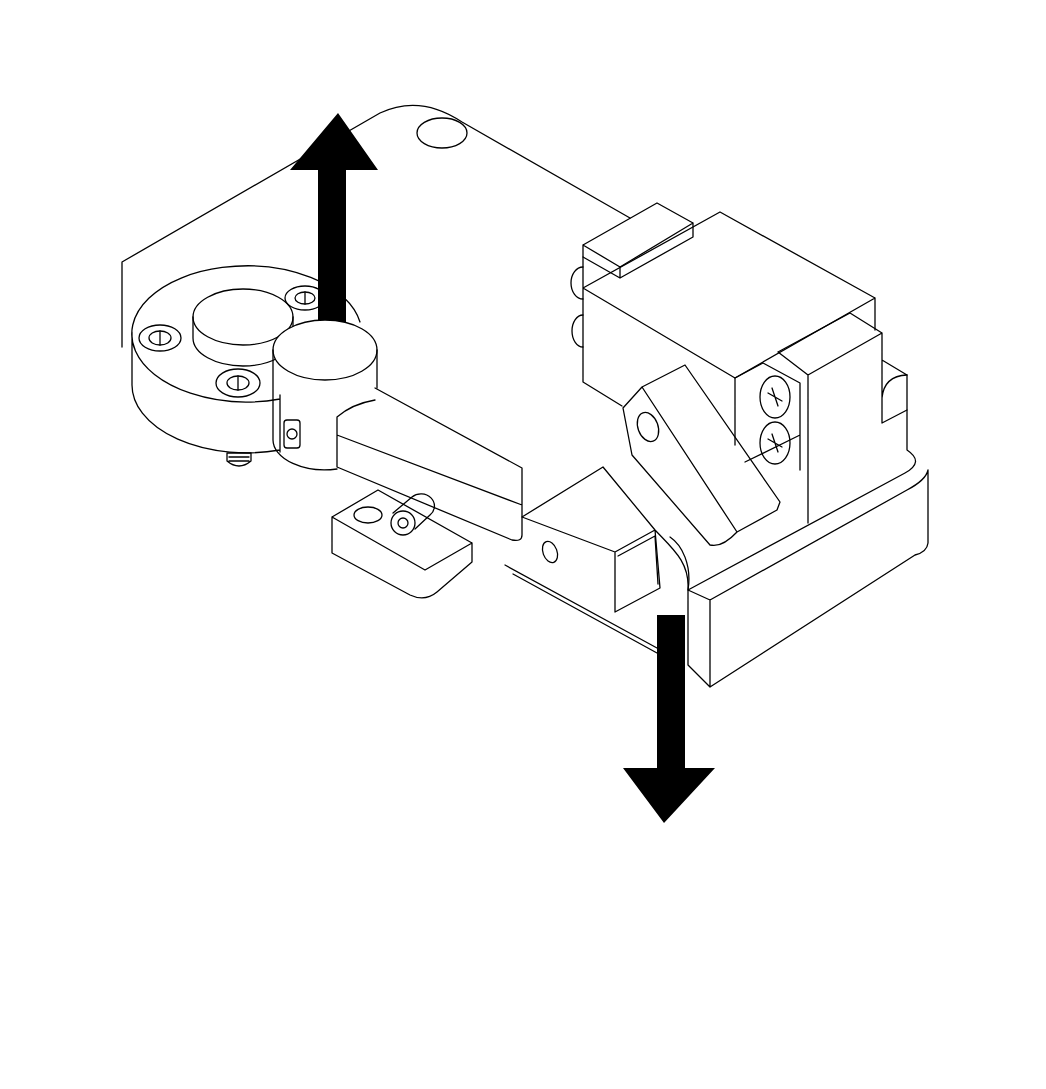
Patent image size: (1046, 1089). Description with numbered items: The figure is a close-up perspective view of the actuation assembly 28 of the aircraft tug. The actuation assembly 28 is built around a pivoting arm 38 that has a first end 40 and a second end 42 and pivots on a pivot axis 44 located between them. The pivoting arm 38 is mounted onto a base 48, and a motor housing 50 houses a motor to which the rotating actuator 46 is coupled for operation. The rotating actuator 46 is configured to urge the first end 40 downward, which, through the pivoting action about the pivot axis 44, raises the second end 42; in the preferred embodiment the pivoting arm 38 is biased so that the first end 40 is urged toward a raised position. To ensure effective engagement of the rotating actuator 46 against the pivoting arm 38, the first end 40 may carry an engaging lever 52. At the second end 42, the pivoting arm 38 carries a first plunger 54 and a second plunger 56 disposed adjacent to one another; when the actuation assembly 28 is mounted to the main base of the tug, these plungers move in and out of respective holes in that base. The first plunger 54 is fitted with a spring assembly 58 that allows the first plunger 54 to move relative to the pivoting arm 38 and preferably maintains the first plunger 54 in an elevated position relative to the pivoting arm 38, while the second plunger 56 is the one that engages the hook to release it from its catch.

The actuation assembly 28 is at (192, 95).
The pivoting arm 38 is at (361, 481).
The first end 40 is at (598, 570).
The second end 42 is at (230, 487).
The pivot axis 44 is at (401, 525).
The rotating actuator 46 is at (687, 498).
The base 48 is at (501, 345).
The motor housing 50 is at (753, 313).
The engaging lever 52 is at (653, 540).
The first plunger 54 is at (339, 345).
The second plunger 56 is at (241, 320).
The spring assembly 58 is at (290, 424).